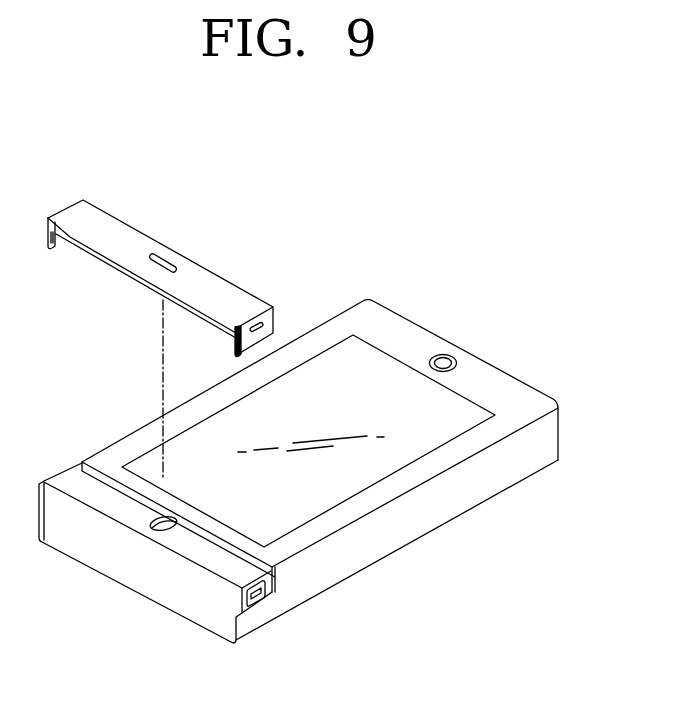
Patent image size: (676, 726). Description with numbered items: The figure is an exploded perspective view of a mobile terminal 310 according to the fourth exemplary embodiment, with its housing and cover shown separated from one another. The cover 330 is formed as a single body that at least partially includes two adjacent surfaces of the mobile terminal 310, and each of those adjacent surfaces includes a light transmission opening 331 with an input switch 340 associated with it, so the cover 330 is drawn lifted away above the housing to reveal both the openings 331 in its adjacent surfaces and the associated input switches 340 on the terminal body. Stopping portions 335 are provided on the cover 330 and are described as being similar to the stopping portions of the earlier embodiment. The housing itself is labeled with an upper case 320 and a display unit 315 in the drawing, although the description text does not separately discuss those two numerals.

The mobile terminal 310 is at (309, 437).
The display unit 315 is at (428, 432).
The upper case 320 is at (500, 387).
The cover 330 is at (201, 323).
The light transmission opening 331 is at (163, 259).
The stopping portions 335 is at (232, 342).
The input switch 340 is at (241, 598).